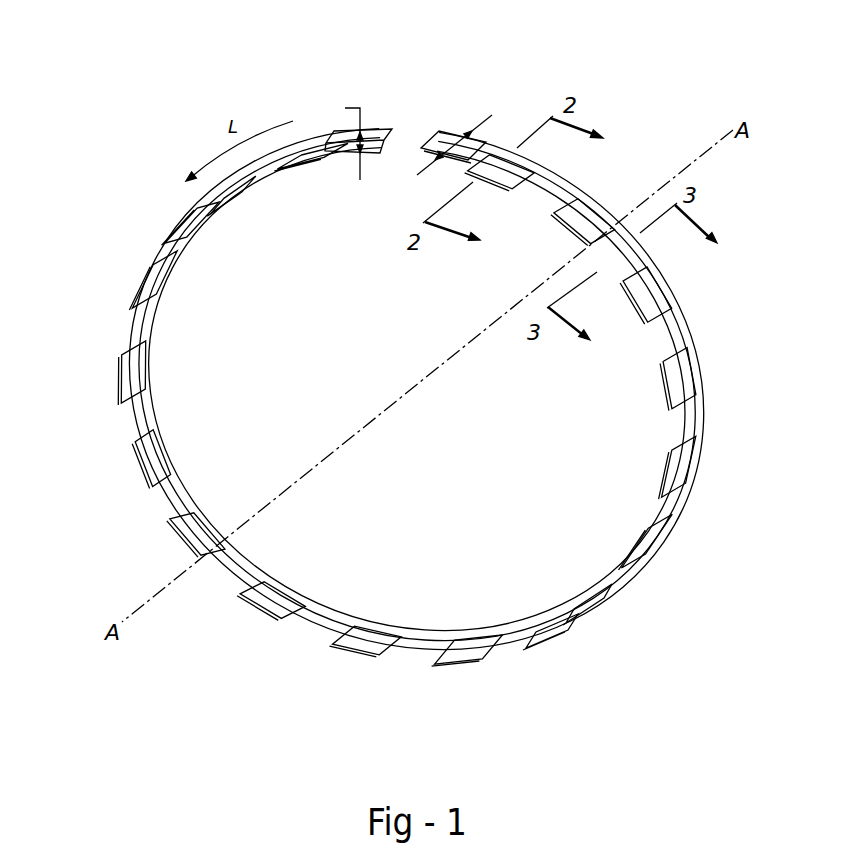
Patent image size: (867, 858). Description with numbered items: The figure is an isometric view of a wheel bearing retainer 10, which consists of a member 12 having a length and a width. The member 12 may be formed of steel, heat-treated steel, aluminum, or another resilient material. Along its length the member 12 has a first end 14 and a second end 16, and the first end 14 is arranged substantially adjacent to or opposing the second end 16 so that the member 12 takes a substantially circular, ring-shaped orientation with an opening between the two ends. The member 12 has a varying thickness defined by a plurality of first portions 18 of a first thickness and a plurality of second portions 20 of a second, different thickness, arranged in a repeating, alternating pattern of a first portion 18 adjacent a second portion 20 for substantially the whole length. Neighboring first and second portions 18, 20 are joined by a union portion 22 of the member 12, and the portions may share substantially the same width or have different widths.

The retainer 10 is at (133, 52).
The member 12 is at (128, 482).
The first end 14 is at (387, 102).
The second end 16 is at (440, 110).
The first portion 18 is at (306, 169).
The second portion 20 is at (262, 172).
The union portion 22 is at (254, 563).